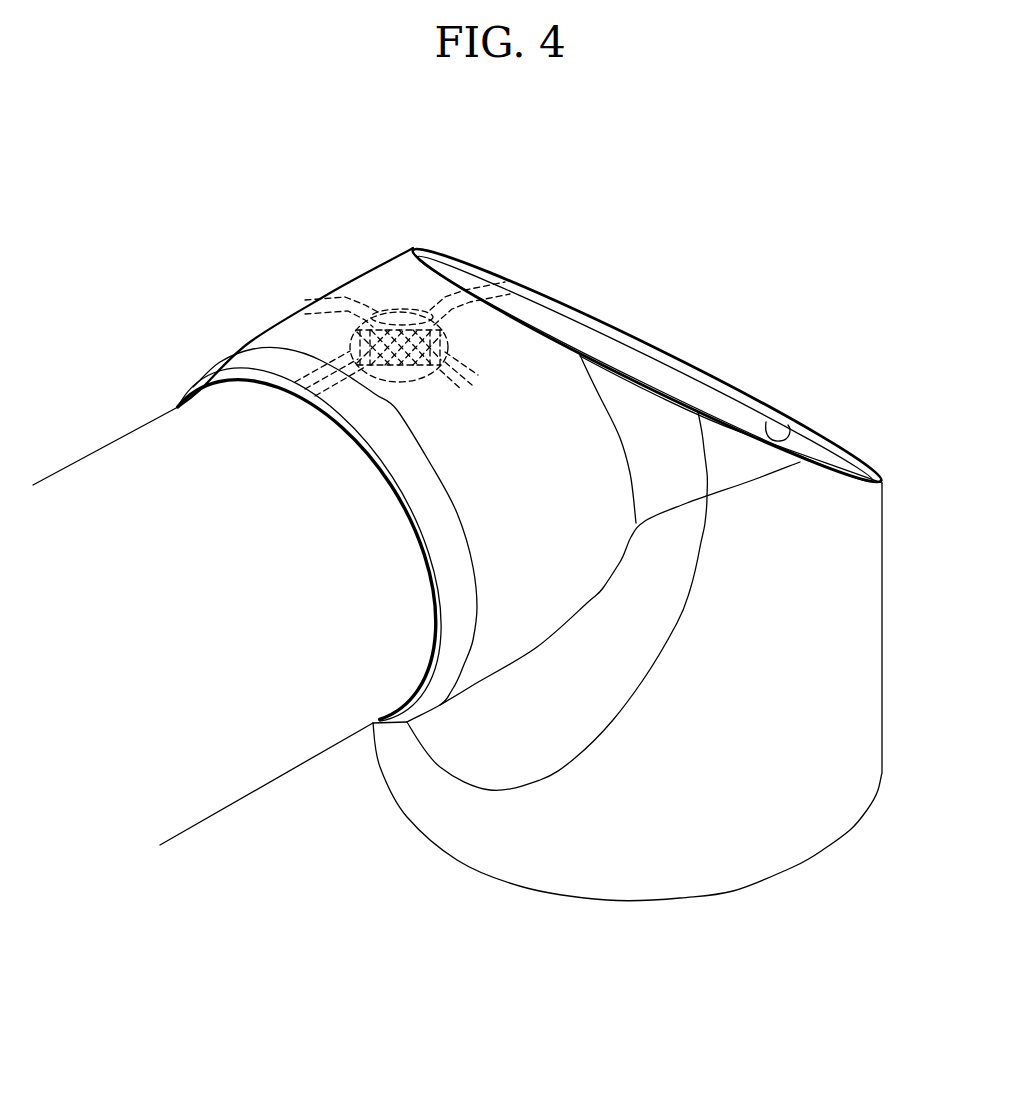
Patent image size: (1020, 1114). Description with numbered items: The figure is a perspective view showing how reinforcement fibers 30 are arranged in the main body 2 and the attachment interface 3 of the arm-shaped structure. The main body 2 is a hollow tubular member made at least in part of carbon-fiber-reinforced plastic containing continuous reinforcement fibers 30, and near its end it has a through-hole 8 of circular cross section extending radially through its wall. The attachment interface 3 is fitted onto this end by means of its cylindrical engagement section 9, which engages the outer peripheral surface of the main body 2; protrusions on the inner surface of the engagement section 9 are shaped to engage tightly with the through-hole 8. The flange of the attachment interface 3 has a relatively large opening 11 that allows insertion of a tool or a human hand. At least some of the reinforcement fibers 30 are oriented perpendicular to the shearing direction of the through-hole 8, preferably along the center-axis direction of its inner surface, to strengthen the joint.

The main body 2 is at (262, 787).
The attachment interface 3 is at (626, 299).
The through-hole 8 is at (402, 303).
The engagement section 9 is at (302, 342).
The opening 11 is at (766, 422).
The reinforcement fibers 30 is at (383, 297).